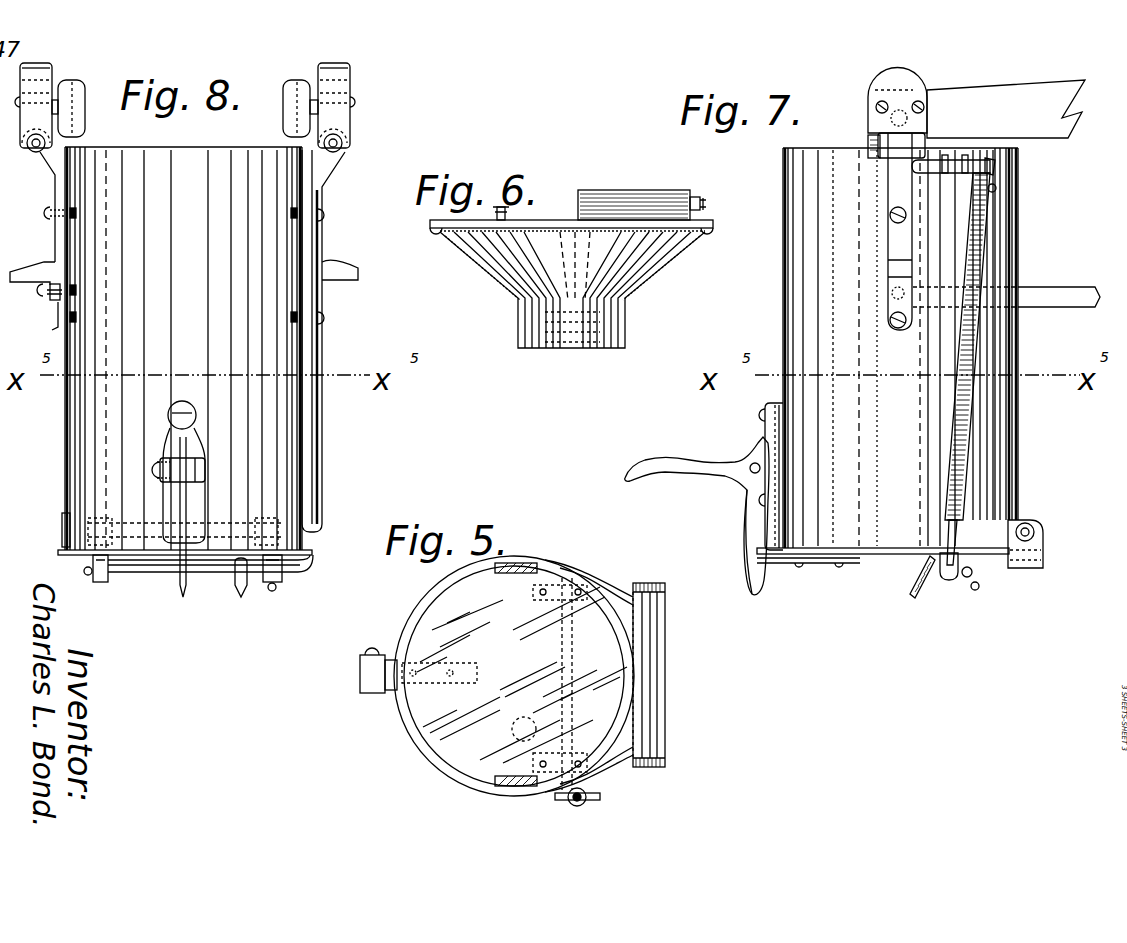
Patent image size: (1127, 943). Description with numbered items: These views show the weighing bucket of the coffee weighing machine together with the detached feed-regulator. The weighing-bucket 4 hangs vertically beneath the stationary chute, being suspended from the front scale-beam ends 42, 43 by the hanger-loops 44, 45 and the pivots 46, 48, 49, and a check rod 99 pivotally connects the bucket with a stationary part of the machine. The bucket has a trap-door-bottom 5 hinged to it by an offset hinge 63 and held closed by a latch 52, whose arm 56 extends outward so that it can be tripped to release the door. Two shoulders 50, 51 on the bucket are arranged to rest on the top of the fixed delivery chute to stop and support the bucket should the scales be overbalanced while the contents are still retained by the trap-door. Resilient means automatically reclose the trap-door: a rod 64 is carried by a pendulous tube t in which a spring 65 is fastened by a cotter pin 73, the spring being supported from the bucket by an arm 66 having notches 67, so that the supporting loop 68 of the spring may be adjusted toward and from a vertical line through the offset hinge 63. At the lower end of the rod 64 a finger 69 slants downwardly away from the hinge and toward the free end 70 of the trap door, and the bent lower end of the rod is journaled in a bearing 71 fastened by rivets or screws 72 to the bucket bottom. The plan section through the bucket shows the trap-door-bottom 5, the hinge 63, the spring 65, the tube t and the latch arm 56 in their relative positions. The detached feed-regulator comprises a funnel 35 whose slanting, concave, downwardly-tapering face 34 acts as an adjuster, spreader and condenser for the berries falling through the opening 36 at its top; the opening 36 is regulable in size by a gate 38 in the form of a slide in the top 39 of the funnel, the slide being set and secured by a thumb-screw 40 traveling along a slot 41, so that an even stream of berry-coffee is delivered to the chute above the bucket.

In FIG. 8, the weighing-bucket 4 is at (56, 460).
In FIG. 5, the weighing-bucket 4 is at (398, 612).
In FIG. 7, the weighing-bucket 4 is at (1024, 446).
In FIG. 8, the trap-door-bottom 5 is at (157, 555).
In FIG. 5, the trap-door-bottom 5 is at (514, 684).
In FIG. 7, the trap-door-bottom 5 is at (878, 557).
In FIG. 8, the pendulous tube t is at (328, 456).
In FIG. 5, the pendulous tube t is at (568, 805).
In FIG. 7, the pendulous tube t is at (978, 462).
In FIG. 6, the face of the funnel 34 is at (622, 272).
In FIG. 6, the funnel 35 is at (484, 262).
In FIG. 6, the opening 36 is at (670, 215).
In FIG. 6, the gate 38 is at (612, 215).
In FIG. 6, the top of the funnel 39 is at (560, 228).
In FIG. 6, the thumb-screw 40 is at (493, 217).
In FIG. 6, the slot 41 is at (440, 228).
In FIG. 8, the front scale-beam end 42 is at (293, 92).
In FIG. 7, the front scale-beam end 42 is at (1006, 109).
In FIG. 8, the front scale-beam end 43 is at (80, 103).
In FIG. 8, the hanger-loop 44 is at (340, 65).
In FIG. 7, the hanger-loop 44 is at (890, 72).
In FIG. 8, the hanger-loop 45 is at (35, 63).
In FIG. 8, the pivot 46 is at (355, 103).
In FIG. 7, the pivot 46 is at (905, 95).
In FIG. 8, the pivot 48 is at (345, 146).
In FIG. 7, the pivot 48 is at (868, 145).
In FIG. 8, the pivot 49 is at (34, 150).
In FIG. 8, the shoulder 50 is at (33, 277).
In FIG. 8, the shoulder 51 is at (345, 280).
In FIG. 7, the shoulder 51 is at (888, 278).
In FIG. 8, the latch 52 is at (183, 590).
In FIG. 7, the latch 52 is at (745, 540).
In FIG. 8, the arm of the latch 56 is at (168, 468).
In FIG. 5, the arm of the latch 56 is at (360, 675).
In FIG. 7, the arm of the latch 56 is at (703, 432).
In FIG. 5, the offset hinge 63 is at (657, 713).
In FIG. 7, the offset hinge 63 is at (1028, 528).
In FIG. 8, the rod 64 is at (310, 540).
In FIG. 7, the rod 64 is at (948, 533).
In FIG. 5, the spring 65 is at (590, 795).
In FIG. 7, the spring 65 is at (978, 352).
In FIG. 7, the arm 66 is at (992, 170).
In FIG. 7, the notches 67 is at (965, 155).
In FIG. 7, the supporting loop 68 is at (988, 162).
In FIG. 8, the finger 69 is at (245, 590).
In FIG. 5, the finger 69 is at (504, 732).
In FIG. 7, the finger 69 is at (945, 588).
In FIG. 5, the free end of the trap door bottom 70 is at (420, 745).
In FIG. 7, the free end of the trap door bottom 70 is at (787, 558).
In FIG. 8, the bearing 71 is at (285, 578).
In FIG. 7, the bearing 71 is at (977, 590).
In FIG. 8, the rivets or screws 72 is at (93, 577).
In FIG. 7, the rivets or screws 72 is at (912, 592).
In FIG. 7, the cotter pin 73 is at (996, 188).
In FIG. 8, the check rod 99 is at (57, 290).
In FIG. 7, the check rod 99 is at (1042, 293).